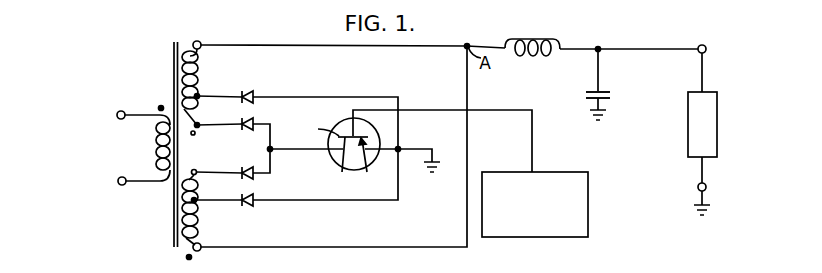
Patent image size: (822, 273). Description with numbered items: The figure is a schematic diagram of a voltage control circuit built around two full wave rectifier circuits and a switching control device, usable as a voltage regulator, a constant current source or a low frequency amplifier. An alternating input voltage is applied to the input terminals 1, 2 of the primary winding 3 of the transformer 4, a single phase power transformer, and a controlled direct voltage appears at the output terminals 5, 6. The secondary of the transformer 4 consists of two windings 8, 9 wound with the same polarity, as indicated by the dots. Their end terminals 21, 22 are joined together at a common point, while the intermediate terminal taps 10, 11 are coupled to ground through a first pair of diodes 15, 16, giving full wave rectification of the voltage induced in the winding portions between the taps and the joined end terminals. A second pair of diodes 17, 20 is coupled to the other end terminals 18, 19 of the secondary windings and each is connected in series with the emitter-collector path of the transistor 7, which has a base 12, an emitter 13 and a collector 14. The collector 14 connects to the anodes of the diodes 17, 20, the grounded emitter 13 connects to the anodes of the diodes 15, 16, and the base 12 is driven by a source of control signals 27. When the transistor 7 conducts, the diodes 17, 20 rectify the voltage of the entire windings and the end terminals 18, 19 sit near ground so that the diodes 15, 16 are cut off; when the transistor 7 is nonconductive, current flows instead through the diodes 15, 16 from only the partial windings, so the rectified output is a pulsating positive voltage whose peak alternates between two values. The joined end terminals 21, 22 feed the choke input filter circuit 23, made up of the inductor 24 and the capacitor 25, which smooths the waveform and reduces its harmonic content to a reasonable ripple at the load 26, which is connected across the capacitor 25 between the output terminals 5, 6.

The input terminal 1 is at (121, 111).
The input terminal 2 is at (122, 185).
The primary winding 3 is at (156, 152).
The transformer 4 is at (166, 38).
The output terminal 5 is at (705, 46).
The output terminal 6 is at (707, 187).
The transistor 7 is at (321, 116).
The secondary winding 8 is at (197, 73).
The secondary winding 9 is at (199, 234).
The intermediate terminal tap 10 is at (199, 96).
The intermediate terminal tap 11 is at (197, 201).
The base 12 is at (318, 128).
The emitter 13 is at (367, 166).
The collector 14 is at (335, 165).
The diode 15 is at (244, 92).
The diode 16 is at (246, 204).
The diode 17 is at (250, 121).
The end terminal 18 is at (200, 127).
The end terminal 19 is at (197, 170).
The diode 20 is at (252, 178).
The end terminal 21 is at (197, 41).
The end terminal 22 is at (201, 251).
The choke input filter circuit 23 is at (547, 86).
The inductor 24 is at (538, 38).
The capacitor 25 is at (614, 95).
The load 26 is at (718, 123).
The source of control signals 27 is at (589, 203).